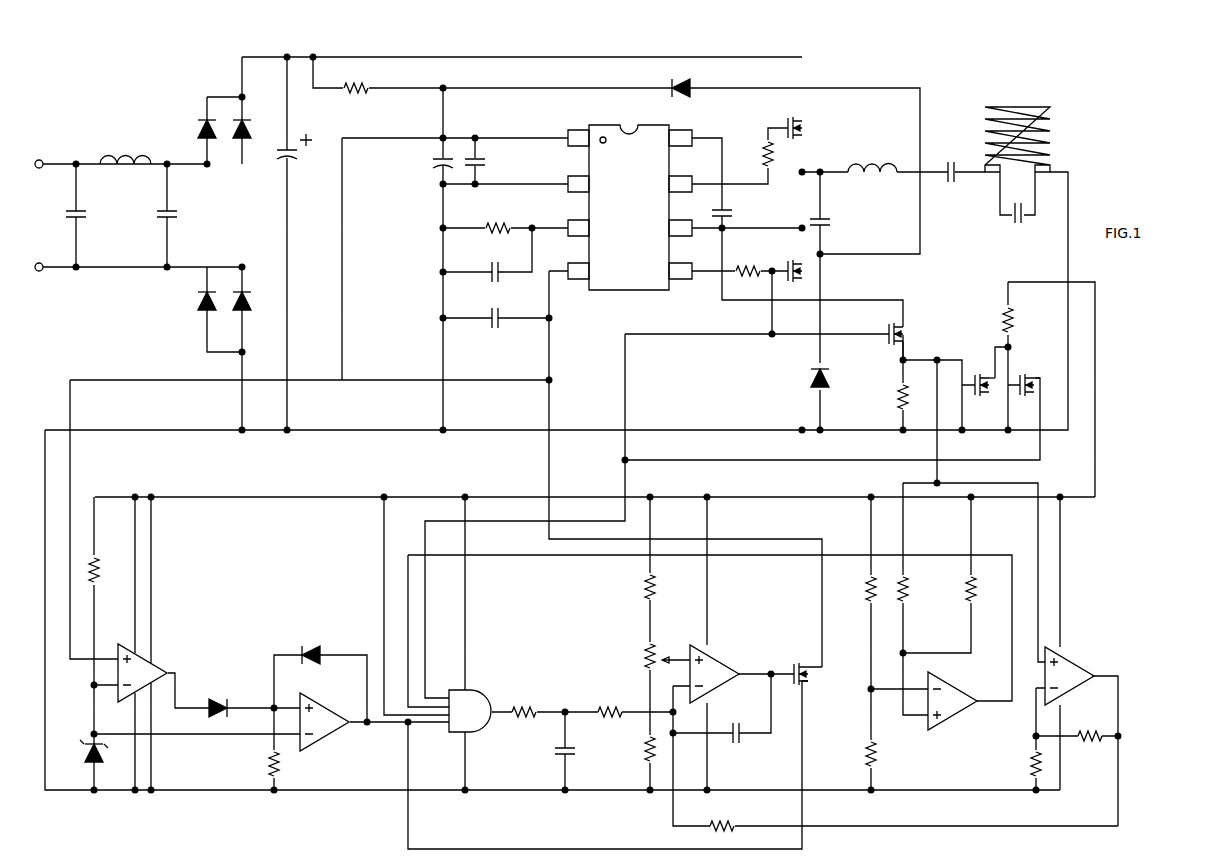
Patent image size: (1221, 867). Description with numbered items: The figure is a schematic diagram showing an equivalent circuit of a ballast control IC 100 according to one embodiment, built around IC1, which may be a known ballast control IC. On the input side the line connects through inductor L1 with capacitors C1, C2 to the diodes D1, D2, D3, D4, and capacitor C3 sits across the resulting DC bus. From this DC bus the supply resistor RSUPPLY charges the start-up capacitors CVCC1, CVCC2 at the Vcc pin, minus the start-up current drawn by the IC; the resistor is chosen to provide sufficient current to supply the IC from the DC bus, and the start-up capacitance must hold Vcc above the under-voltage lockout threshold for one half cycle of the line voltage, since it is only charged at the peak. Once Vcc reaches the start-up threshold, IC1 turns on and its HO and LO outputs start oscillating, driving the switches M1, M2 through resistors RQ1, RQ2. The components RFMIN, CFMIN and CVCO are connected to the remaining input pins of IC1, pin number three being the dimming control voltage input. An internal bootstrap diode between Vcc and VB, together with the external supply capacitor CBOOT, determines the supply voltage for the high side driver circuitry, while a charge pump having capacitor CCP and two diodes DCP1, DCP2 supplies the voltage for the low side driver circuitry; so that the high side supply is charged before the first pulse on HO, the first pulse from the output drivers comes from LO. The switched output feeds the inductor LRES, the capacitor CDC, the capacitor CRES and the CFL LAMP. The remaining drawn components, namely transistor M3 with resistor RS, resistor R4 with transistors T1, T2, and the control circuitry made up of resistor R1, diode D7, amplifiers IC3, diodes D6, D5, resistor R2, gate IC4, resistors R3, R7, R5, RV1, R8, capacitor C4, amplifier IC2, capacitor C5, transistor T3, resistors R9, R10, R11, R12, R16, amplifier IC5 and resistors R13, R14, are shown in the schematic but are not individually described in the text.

The ballast control IC 100 is at (155, 100).
The inductor L1 is at (125, 150).
The capacitor C1 is at (88, 216).
The capacitor C2 is at (179, 216).
The rectifier diode D1 is at (195, 129).
The rectifier diode D2 is at (254, 129).
The rectifier diode D3 is at (195, 305).
The rectifier diode D4 is at (254, 305).
The bulk capacitor C3 is at (300, 153).
The supply resistor RSUPPLY is at (350, 99).
The start-up capacitor CVCC1 is at (439, 141).
The start-up capacitor CVCC2 is at (484, 140).
The frequency setting resistor RFMIN is at (496, 219).
The frequency setting capacitor CFMIN is at (496, 265).
The VCO capacitor CVCO is at (493, 309).
The ballast control IC IC1 is at (620, 194).
The charge pump diode DCP1 is at (703, 81).
The gate resistor RQ1 is at (754, 145).
The high side MOSFET M1 is at (790, 118).
The external supply capacitor CBOOT is at (750, 213).
The gate resistor RQ2 is at (748, 259).
The low side MOSFET M2 is at (790, 260).
The charge pump capacitor CCP is at (838, 223).
The resonant inductor LRES is at (872, 158).
The DC blocking capacitor CDC is at (953, 184).
The compact fluorescent lamp CFL LAMP is at (1019, 151).
The resonant capacitor CRES is at (1020, 222).
The charge pump diode DCP2 is at (842, 378).
The sense MOSFET M3 is at (911, 340).
The sense resistor RS is at (890, 397).
The resistor R4 is at (1021, 320).
The transistor T1 is at (981, 399).
The transistor T2 is at (1029, 399).
The resistor R1 is at (107, 570).
The zener diode D7 is at (83, 751).
The comparator HA1-4905-5 IC3 is at (556, 701).
The diode 1N4148 D6 is at (217, 689).
The diode 1N4148 D5 is at (317, 641).
The resistor R2 is at (259, 764).
The AND gate 4082B IC4 is at (456, 694).
The resistor R3 is at (524, 702).
The capacitor C4 is at (577, 751).
The resistor R7 is at (610, 702).
The resistor R5 is at (639, 587).
The potentiometer RV1 is at (633, 656).
The resistor R8 is at (639, 751).
The op amp CA3140 IC2 is at (723, 650).
The capacitor C5 is at (739, 743).
The transistor T3 is at (808, 662).
The resistor R9 is at (733, 818).
The resistor R10 is at (854, 589).
The resistor R11 is at (920, 589).
The resistor R12 is at (988, 589).
The resistor R16 is at (888, 754).
The op amp CA3140 IC5 is at (1078, 648).
The resistor R13 is at (1020, 766).
The resistor R14 is at (1089, 748).